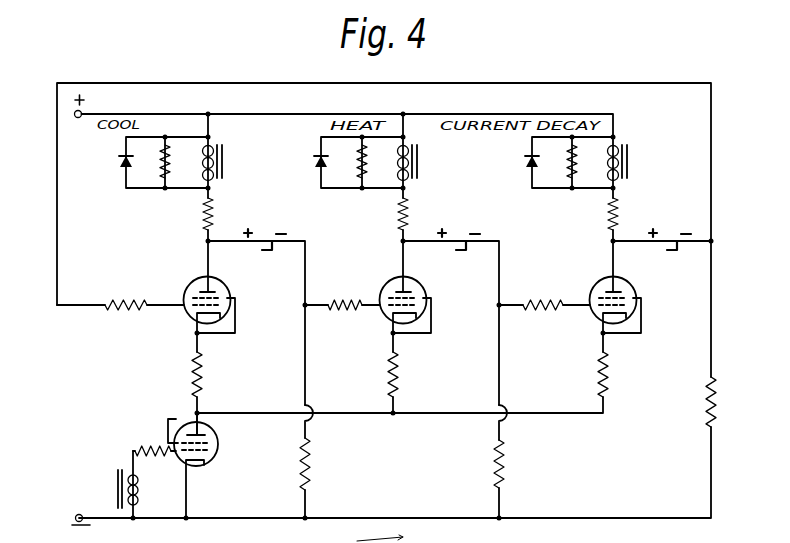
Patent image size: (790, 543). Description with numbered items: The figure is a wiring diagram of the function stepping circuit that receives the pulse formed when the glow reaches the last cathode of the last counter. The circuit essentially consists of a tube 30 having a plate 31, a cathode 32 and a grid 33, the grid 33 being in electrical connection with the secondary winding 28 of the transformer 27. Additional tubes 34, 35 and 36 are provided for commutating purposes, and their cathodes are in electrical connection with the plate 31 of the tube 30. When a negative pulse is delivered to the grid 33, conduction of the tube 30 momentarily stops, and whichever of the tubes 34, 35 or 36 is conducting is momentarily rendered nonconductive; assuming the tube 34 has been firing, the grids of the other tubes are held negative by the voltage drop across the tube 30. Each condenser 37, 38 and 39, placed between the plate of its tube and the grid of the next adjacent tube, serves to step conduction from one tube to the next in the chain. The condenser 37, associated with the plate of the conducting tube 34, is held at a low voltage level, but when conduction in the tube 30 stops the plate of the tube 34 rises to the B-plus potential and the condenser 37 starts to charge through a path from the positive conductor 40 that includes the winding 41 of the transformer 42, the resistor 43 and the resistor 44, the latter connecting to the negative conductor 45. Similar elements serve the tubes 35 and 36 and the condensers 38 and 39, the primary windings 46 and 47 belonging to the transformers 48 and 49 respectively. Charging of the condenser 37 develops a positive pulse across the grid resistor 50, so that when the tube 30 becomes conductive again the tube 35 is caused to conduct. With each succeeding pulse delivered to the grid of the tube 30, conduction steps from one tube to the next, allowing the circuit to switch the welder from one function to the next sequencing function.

The transformer 27 is at (107, 477).
The secondary winding 28 is at (126, 463).
The tube 30 is at (220, 443).
The plate 31 is at (190, 436).
The cathode 32 is at (203, 466).
The grid 33 is at (175, 457).
The tube 34 is at (233, 317).
The tube 35 is at (433, 327).
The tube 36 is at (643, 323).
The condenser 37 is at (267, 251).
The condenser 38 is at (461, 251).
The condenser 39 is at (672, 251).
The positive conductor 40 is at (257, 113).
The winding 41 is at (203, 168).
The transformer 42 is at (240, 165).
The resistor 43 is at (203, 215).
The resistor 44 is at (313, 462).
The negative conductor 45 is at (620, 513).
The primary winding 46 is at (398, 173).
The primary winding 47 is at (607, 175).
The transformer 48 is at (431, 161).
The transformer 49 is at (642, 163).
The grid resistor 50 is at (348, 298).